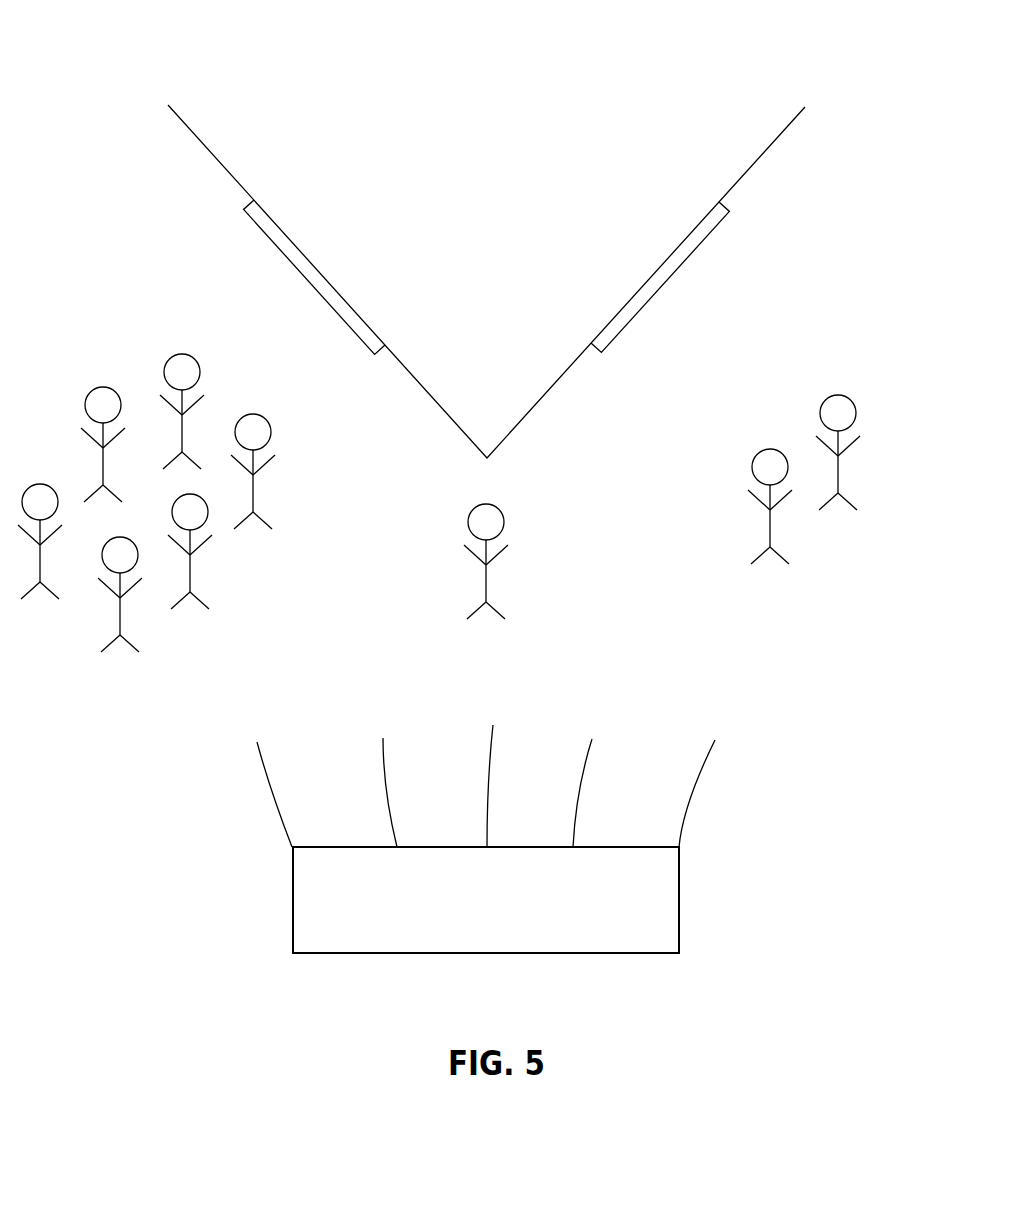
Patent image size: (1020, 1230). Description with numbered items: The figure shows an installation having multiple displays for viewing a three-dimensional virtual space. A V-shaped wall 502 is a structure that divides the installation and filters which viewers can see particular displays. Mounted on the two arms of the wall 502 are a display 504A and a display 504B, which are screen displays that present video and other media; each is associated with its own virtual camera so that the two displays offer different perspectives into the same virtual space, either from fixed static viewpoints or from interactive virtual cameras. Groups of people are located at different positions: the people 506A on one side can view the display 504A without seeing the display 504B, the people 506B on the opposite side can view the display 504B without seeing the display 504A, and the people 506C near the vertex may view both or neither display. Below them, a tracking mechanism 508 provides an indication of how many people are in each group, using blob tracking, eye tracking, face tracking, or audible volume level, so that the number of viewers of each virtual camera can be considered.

The wall 502 is at (168, 105).
The display 504A is at (244, 209).
The display 504B is at (729, 211).
The people 506A is at (223, 556).
The people 506B is at (808, 548).
The people 506C is at (487, 588).
The tracking mechanism 508 is at (486, 839).